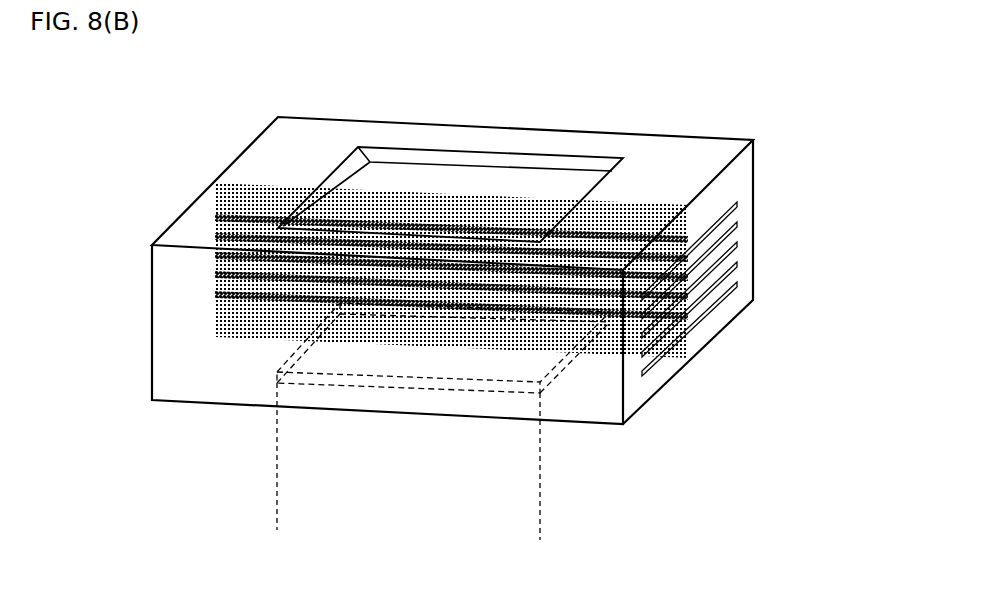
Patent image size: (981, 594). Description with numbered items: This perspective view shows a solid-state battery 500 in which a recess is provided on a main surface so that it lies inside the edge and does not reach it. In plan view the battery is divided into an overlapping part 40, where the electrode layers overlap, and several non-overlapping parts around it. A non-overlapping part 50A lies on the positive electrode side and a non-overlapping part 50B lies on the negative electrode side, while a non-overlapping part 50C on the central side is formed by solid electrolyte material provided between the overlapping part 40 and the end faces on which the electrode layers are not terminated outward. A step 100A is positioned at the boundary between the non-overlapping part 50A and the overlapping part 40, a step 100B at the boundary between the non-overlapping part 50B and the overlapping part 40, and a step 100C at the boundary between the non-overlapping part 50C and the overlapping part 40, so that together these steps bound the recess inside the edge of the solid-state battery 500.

The solid-state battery 500 is at (538, 100).
The step between non-overlapping part on positive electrode side and overlapping par 100A is at (595, 197).
The step between non-overlapping part on negative electrode side and overlapping par 100B is at (327, 188).
The step between non-overlapping part on central side and overlapping part 100C is at (427, 230).
The overlapping part 40 is at (388, 352).
The non-overlapping part on positive electrode side 50A is at (615, 492).
The non-overlapping part on negative electrode side 50B is at (233, 477).
The non-overlapping part on central side 50C is at (438, 402).